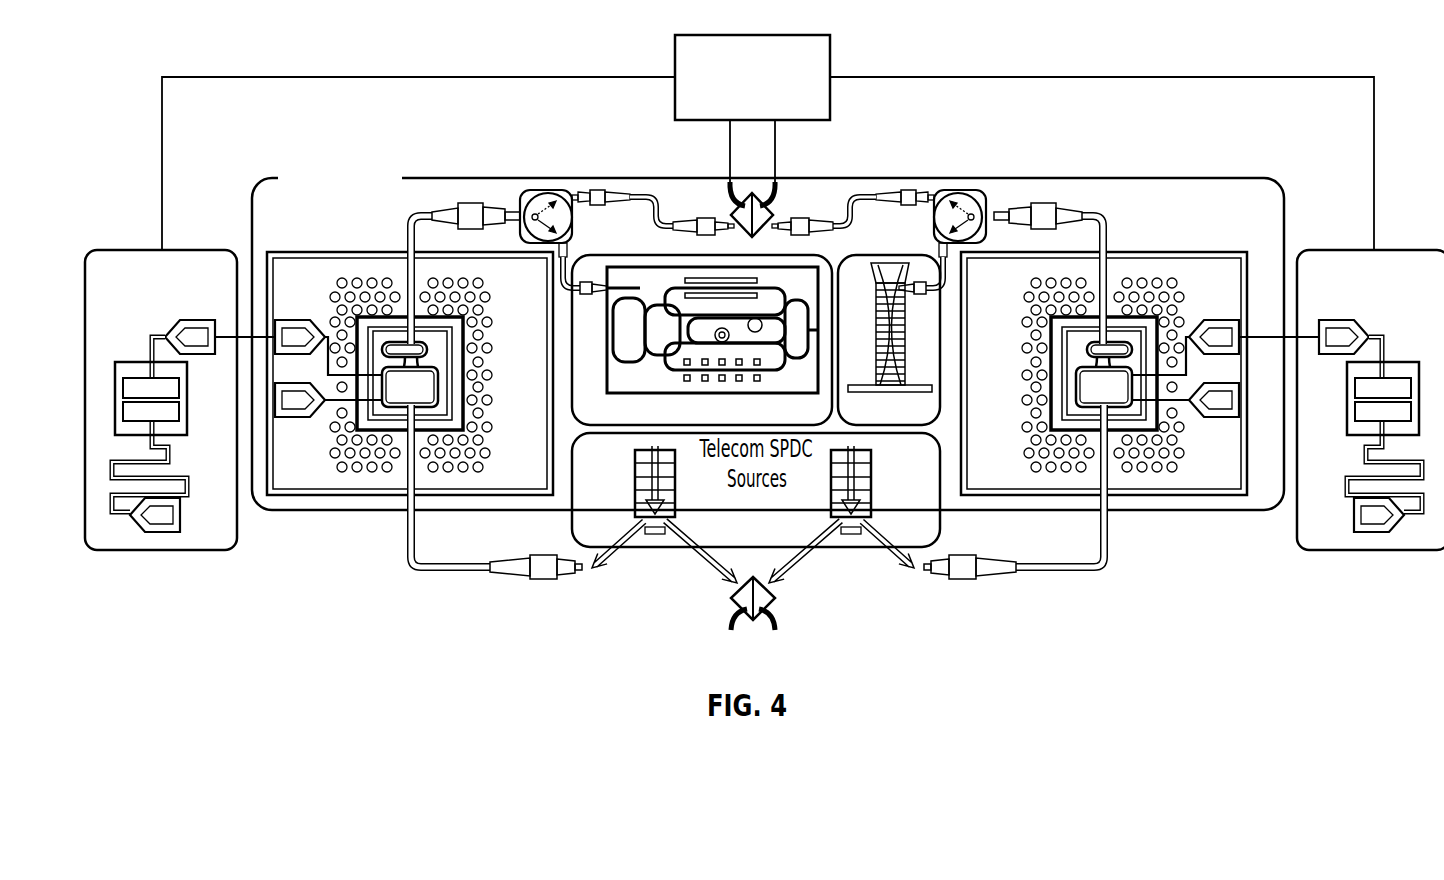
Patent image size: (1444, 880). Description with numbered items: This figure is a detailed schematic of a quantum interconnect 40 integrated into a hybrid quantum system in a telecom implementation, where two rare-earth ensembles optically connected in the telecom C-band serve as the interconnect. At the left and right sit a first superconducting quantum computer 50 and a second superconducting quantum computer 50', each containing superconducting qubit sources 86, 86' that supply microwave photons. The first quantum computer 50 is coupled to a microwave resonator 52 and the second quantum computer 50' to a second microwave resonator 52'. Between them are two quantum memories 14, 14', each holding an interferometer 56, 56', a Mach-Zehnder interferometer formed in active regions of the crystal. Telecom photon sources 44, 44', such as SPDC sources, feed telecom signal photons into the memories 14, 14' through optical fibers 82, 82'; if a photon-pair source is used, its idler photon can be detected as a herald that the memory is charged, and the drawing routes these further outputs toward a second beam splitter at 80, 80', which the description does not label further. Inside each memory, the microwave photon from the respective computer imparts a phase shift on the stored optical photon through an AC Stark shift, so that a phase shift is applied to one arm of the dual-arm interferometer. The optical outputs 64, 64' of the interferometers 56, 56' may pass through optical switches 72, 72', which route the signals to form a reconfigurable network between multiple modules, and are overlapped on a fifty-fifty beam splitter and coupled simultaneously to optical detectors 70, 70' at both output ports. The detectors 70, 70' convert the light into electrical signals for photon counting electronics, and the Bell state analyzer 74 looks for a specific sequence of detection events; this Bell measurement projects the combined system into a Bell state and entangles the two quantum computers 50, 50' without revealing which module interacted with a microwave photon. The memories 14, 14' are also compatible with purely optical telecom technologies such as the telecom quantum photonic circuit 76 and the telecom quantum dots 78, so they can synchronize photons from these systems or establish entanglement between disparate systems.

The quantum memory 14 is at (410, 419).
The quantum memory 14' is at (1104, 417).
The quantum interconnect 40 is at (420, 178).
The telecom photon source 44 is at (664, 517).
The telecom photon source 44' is at (843, 517).
The first superconducting quantum computer 50 is at (161, 384).
The second superconducting quantum computer 50' is at (1370, 384).
The microwave resonator 52 is at (315, 453).
The second microwave resonator 52' is at (1202, 439).
The interferometer 56 is at (411, 437).
The interferometer 56' is at (1083, 437).
The optical output 64 is at (428, 273).
The optical output 64' is at (1088, 273).
The optical detector 70 is at (713, 166).
The optical detector 70' is at (791, 166).
The optical switching network 72 is at (615, 201).
The optical switch 72' is at (893, 201).
The Bell state analyzer 74 is at (730, 35).
The telecom quantum photonic circuit 76 is at (582, 400).
The telecom quantum dots 78 is at (897, 425).
The beam splitter 80 is at (705, 619).
The beam splitter 80' is at (804, 619).
The optical fiber 82 is at (496, 523).
The optical fiber 82' is at (1014, 523).
The superconducting qubit source 86 is at (418, 167).
The superconducting qubit source 86' is at (1126, 165).